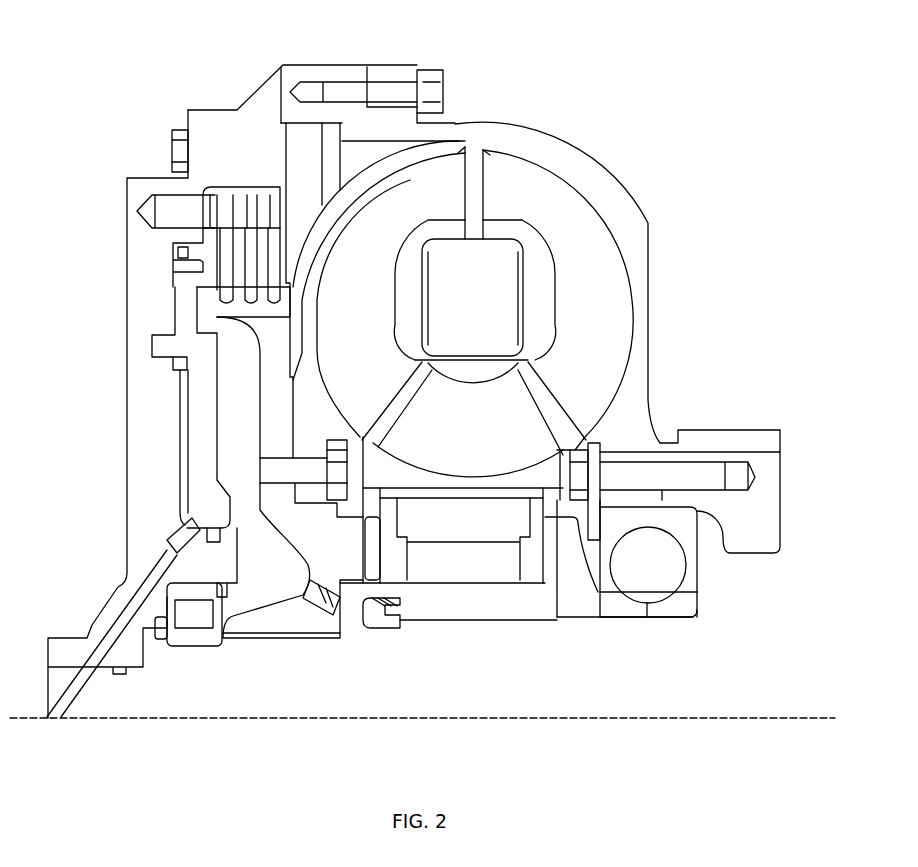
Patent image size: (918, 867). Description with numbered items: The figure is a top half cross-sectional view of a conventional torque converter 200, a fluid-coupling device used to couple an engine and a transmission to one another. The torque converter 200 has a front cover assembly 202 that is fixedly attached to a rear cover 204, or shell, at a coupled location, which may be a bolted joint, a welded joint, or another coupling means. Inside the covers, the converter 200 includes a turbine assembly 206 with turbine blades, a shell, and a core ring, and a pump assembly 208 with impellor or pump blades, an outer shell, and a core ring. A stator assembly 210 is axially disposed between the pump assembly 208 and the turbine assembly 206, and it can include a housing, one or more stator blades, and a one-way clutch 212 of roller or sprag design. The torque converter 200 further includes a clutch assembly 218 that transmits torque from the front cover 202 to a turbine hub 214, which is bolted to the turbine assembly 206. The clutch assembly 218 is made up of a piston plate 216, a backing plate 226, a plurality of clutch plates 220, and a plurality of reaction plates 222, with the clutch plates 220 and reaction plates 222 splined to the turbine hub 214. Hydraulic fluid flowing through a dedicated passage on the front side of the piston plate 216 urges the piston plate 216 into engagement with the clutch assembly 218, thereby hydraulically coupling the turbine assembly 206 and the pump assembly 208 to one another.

The torque converter 200 is at (720, 102).
The front cover assembly 202 is at (217, 130).
The rear cover 204 is at (573, 167).
The turbine assembly 206 is at (430, 180).
The pump assembly 208 is at (592, 292).
The stator assembly 210 is at (500, 427).
The one-way clutch 212 is at (472, 598).
The turbine hub 214 is at (277, 432).
The piston plate 216 is at (203, 408).
The clutch assembly 218 is at (220, 185).
The clutch plates 220 is at (213, 297).
The reaction plates 222 is at (238, 252).
The backing plate 226 is at (300, 143).